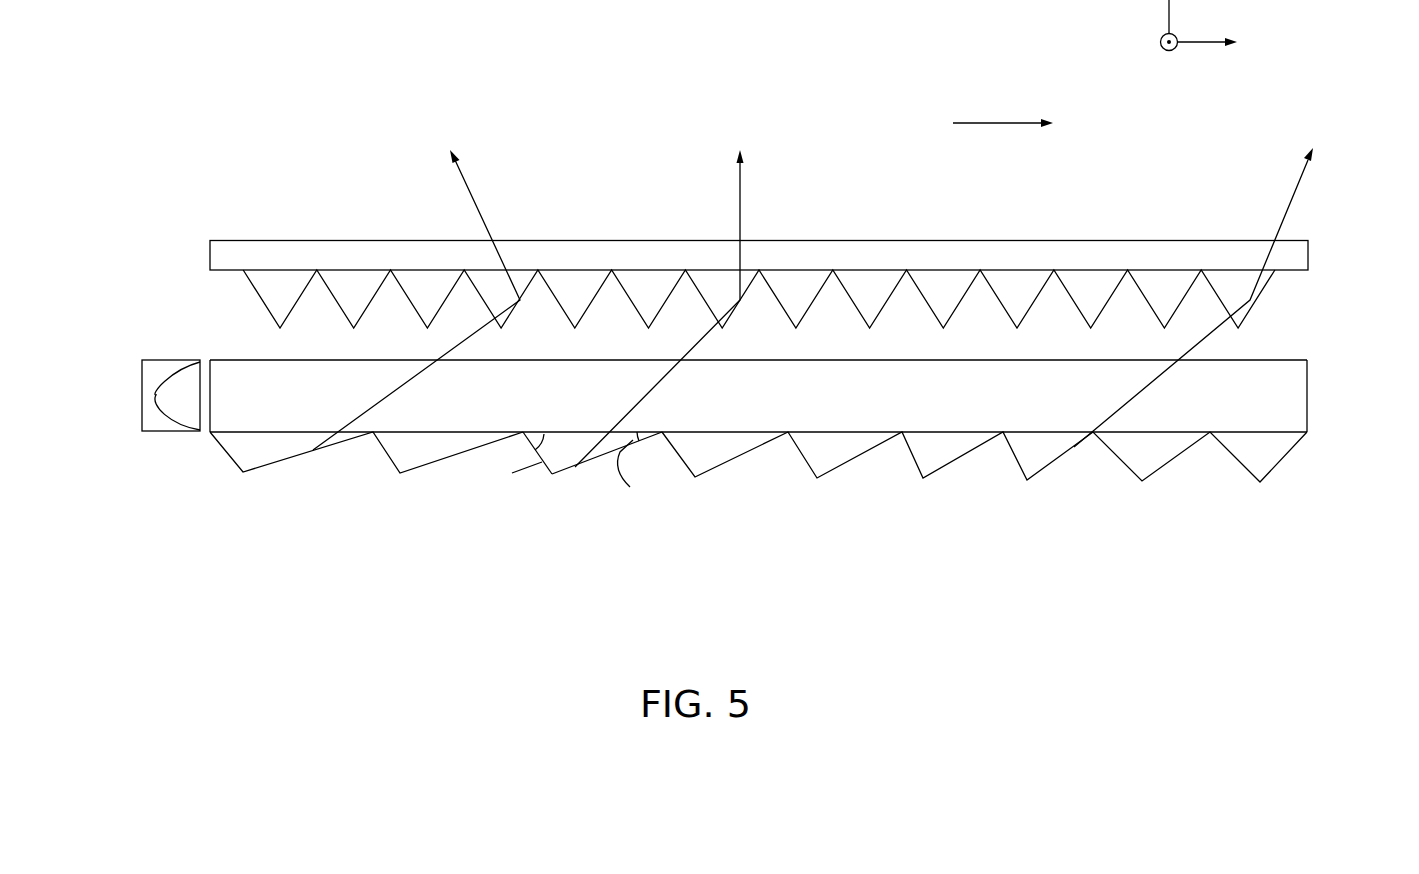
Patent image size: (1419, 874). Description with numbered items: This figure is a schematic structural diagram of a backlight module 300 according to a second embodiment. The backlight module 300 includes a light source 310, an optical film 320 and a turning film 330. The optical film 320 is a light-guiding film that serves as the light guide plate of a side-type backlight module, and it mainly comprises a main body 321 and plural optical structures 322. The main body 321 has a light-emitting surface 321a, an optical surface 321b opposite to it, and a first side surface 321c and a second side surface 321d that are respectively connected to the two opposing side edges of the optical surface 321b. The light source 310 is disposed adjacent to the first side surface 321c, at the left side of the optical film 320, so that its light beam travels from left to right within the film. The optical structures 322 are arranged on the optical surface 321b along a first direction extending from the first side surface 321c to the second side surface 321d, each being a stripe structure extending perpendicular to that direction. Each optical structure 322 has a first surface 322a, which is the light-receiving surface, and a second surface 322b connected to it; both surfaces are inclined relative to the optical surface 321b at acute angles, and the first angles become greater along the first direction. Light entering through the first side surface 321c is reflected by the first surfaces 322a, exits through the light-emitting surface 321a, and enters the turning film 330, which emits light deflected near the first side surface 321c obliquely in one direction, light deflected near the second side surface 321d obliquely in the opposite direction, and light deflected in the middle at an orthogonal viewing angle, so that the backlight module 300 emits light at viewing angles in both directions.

The backlight module 300 is at (148, 59).
The light source 310 is at (148, 398).
The optical film 320 is at (200, 328).
The main body 321 is at (1287, 397).
The light-emitting surface 321a is at (1280, 358).
The optical surface 321b is at (897, 452).
The first side surface 321c is at (208, 420).
The second side surface 321d is at (1308, 370).
The optical structure 322 is at (562, 455).
The first surface 322a is at (603, 458).
The second surface 322b is at (545, 466).
The turning film 330 is at (224, 205).